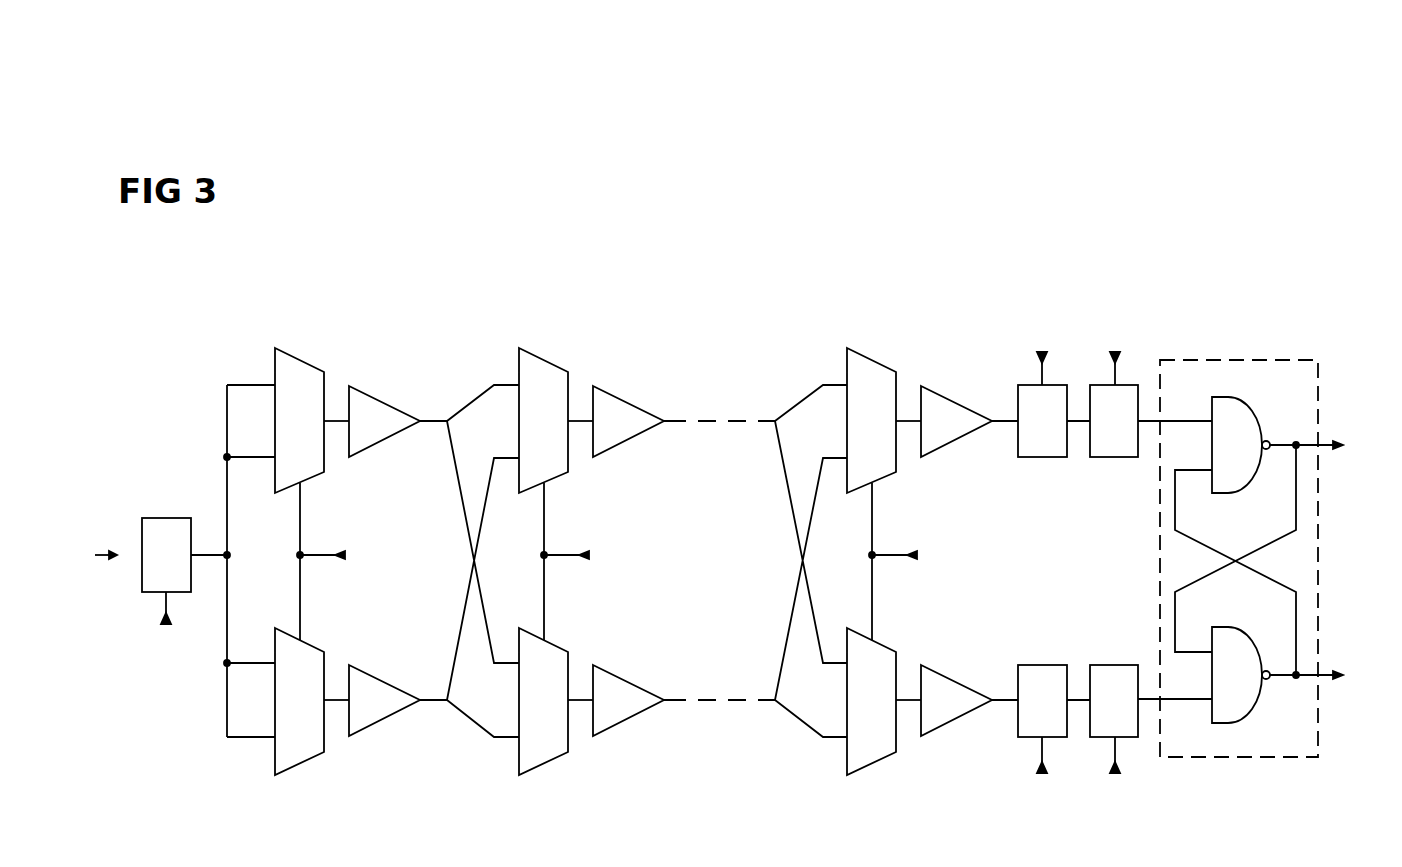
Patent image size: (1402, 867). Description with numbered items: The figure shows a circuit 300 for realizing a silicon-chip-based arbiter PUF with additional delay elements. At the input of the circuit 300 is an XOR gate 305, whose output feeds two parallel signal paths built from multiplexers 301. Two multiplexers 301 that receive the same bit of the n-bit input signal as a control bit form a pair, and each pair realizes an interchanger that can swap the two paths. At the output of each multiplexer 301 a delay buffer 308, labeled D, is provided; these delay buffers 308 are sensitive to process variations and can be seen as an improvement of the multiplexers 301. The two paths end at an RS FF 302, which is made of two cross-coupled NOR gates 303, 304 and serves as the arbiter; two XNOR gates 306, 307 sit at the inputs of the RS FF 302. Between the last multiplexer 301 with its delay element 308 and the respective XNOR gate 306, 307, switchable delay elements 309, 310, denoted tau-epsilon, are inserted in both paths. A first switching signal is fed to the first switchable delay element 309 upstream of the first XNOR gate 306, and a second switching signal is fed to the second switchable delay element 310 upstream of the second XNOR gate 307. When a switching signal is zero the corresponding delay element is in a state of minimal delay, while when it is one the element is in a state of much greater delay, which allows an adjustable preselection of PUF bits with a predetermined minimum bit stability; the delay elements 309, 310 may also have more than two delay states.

The circuit 300 is at (1263, 205).
The multiplexer 301 is at (318, 350).
The RS FF 302 is at (1263, 360).
The NOR gate 303 is at (1250, 410).
The NOR gate 304 is at (1230, 627).
The XOR gate 305 is at (157, 518).
The XNOR gate 306 is at (1125, 385).
The XNOR gate 307 is at (1122, 737).
The delay buffer 308 is at (392, 406).
The first switchable delay element 309 is at (1040, 458).
The second switchable delay element 310 is at (1043, 665).